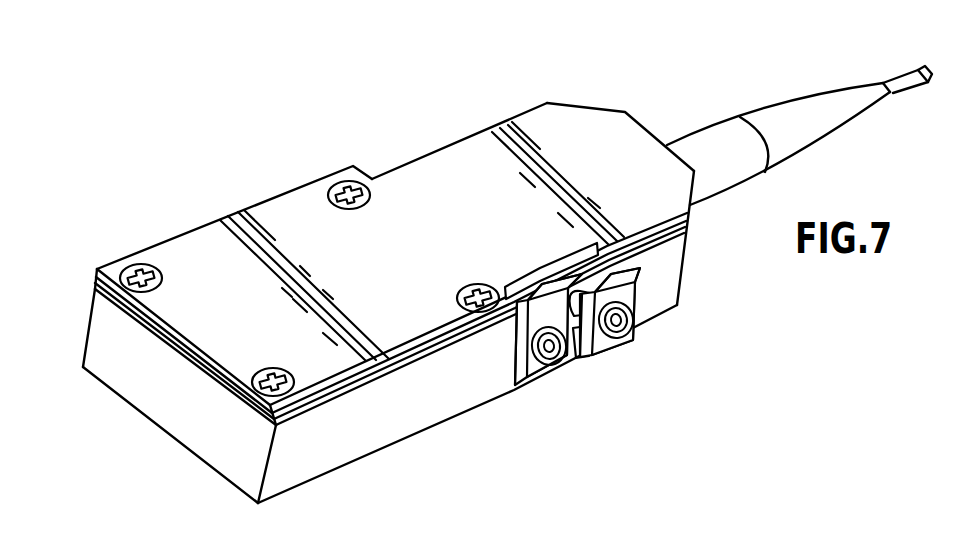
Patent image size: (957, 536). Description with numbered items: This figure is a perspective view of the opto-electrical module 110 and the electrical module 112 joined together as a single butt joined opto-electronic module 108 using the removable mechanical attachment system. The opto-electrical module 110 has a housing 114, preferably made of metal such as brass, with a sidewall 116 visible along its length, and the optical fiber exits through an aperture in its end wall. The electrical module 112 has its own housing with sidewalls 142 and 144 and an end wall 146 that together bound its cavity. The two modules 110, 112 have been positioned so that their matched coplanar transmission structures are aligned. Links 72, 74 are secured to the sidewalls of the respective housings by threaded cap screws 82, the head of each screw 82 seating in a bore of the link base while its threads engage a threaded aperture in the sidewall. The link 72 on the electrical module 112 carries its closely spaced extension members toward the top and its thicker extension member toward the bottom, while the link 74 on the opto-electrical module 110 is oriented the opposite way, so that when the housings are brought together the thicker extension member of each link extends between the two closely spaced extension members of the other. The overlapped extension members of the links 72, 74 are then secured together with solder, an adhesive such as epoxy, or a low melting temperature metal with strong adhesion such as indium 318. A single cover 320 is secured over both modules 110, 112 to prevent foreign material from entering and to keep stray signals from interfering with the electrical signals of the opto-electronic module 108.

The opto-electronic module 108 is at (378, 153).
The sidewall 116 is at (480, 133).
The sidewall 144 is at (260, 203).
The single cover 320 is at (181, 255).
The indium 318 is at (533, 286).
The threaded cap screw 82 is at (547, 352).
The link 72 is at (519, 375).
The link 74 is at (643, 292).
The housing 114 is at (685, 261).
The opto-electrical module 110 is at (698, 289).
The electrical module 112 is at (442, 452).
The sidewall 142 is at (345, 452).
The end wall 146 is at (152, 404).